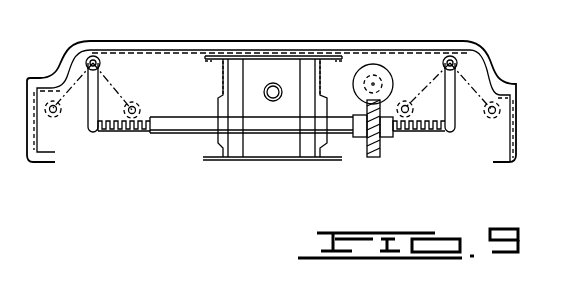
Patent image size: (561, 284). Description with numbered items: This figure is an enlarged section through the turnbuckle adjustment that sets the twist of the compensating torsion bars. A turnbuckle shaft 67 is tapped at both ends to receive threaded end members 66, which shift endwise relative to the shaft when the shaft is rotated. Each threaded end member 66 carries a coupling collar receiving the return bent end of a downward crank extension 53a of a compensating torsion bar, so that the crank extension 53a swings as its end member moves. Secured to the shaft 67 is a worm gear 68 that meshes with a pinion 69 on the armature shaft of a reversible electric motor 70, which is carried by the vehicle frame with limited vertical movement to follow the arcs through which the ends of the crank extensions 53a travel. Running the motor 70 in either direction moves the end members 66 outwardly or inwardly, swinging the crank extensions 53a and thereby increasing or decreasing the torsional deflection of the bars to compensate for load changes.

The crank extension 53a is at (97, 90).
The threaded end member 66 is at (127, 133).
The turnbuckle shaft 67 is at (280, 133).
The worm gear 68 is at (371, 157).
The pinion 69 is at (337, 46).
The electric motor 70 is at (382, 67).